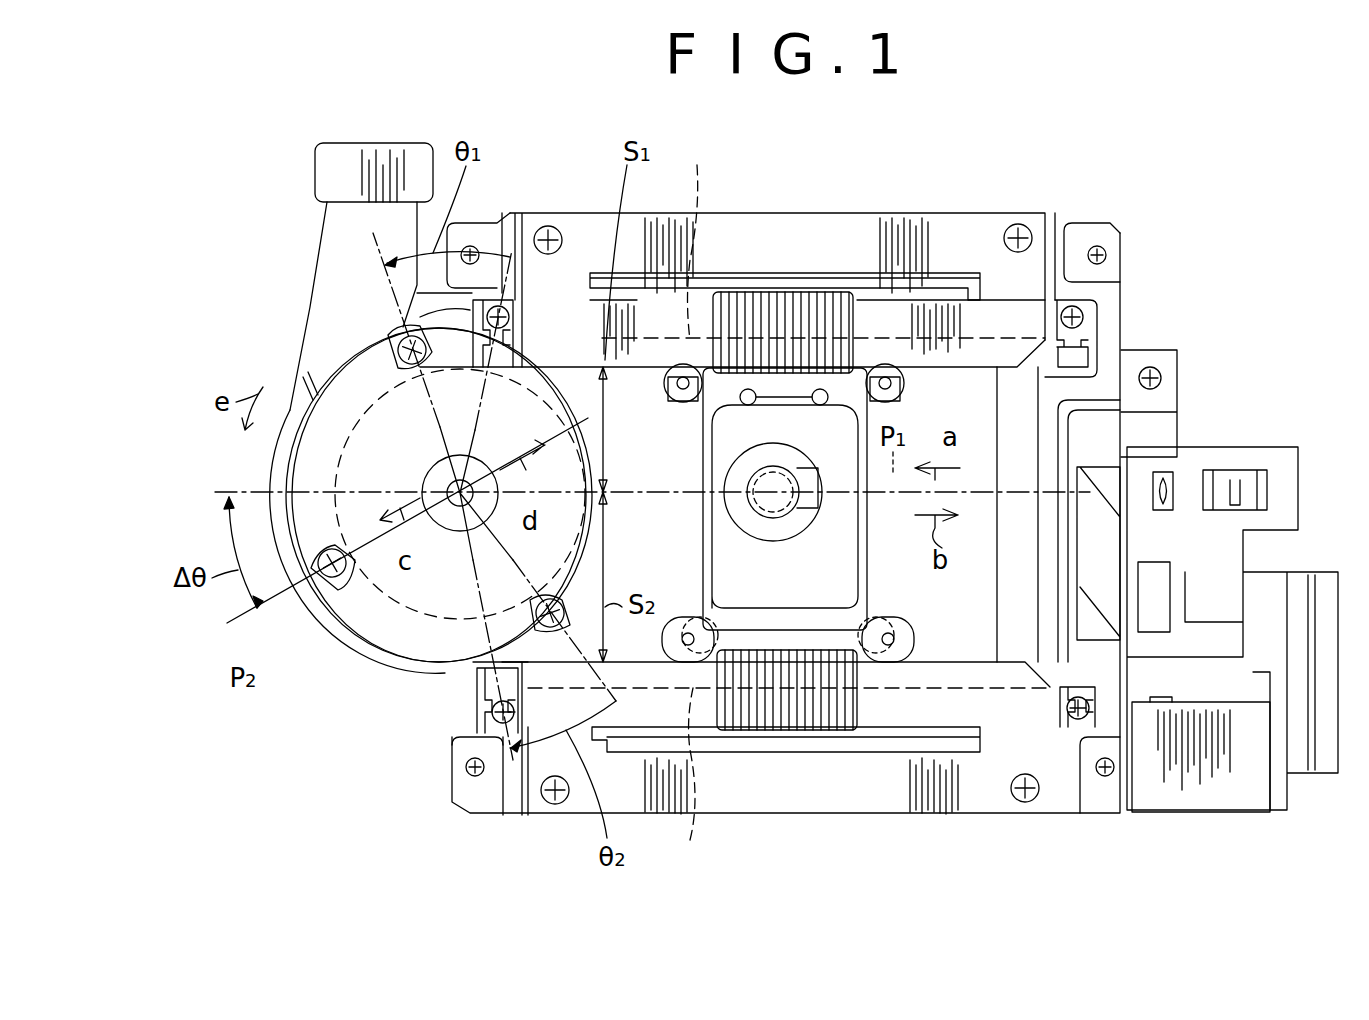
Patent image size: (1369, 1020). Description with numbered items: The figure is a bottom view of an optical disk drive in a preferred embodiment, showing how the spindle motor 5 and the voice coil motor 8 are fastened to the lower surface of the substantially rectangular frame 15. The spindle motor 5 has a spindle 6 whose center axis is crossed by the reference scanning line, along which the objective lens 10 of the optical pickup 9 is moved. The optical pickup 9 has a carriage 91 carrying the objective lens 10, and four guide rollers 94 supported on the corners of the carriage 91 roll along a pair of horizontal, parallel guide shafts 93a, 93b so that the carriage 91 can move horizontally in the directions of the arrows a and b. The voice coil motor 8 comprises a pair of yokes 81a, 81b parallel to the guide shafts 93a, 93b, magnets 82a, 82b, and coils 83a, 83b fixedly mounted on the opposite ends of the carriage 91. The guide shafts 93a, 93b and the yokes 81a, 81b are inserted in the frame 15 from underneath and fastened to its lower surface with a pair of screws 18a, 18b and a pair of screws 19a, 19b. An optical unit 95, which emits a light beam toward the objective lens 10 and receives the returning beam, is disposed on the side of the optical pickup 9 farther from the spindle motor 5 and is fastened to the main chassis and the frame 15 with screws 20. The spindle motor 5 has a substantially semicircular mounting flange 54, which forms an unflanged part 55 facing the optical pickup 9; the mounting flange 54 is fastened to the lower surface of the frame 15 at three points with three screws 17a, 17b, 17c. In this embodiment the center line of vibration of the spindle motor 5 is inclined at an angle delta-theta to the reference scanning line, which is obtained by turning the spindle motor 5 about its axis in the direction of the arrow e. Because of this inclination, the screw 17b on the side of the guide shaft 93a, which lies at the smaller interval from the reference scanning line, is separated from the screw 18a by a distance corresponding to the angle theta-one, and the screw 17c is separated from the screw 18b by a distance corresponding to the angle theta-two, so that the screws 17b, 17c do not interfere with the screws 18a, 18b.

The spindle motor 5 is at (300, 468).
The spindle 6 is at (442, 507).
The voice coil motor 8 is at (897, 215).
The optical pickup 9 is at (884, 588).
The objective lens 10 is at (773, 512).
The frame 15 is at (363, 663).
The screw 17a is at (323, 620).
The screw 17b is at (398, 335).
The screw 17c is at (525, 615).
The screw 18a is at (512, 250).
The screw 18b is at (490, 715).
The screw 19a is at (552, 236).
The screw 19b is at (1022, 228).
The screw 20 is at (1162, 378).
The mounting flange 54 is at (307, 510).
The unflanged part 55 is at (527, 367).
The yoke 81a is at (925, 300).
The yoke 81b is at (948, 760).
The magnet 82a is at (828, 273).
The magnet 82b is at (865, 752).
The coil 83a is at (778, 292).
The coil 83b is at (790, 730).
The carriage 91 is at (720, 515).
The guide shaft 93a is at (696, 238).
The guide shaft 93b is at (690, 780).
The guide roller 94 is at (683, 402).
The optical unit 95 is at (1285, 498).